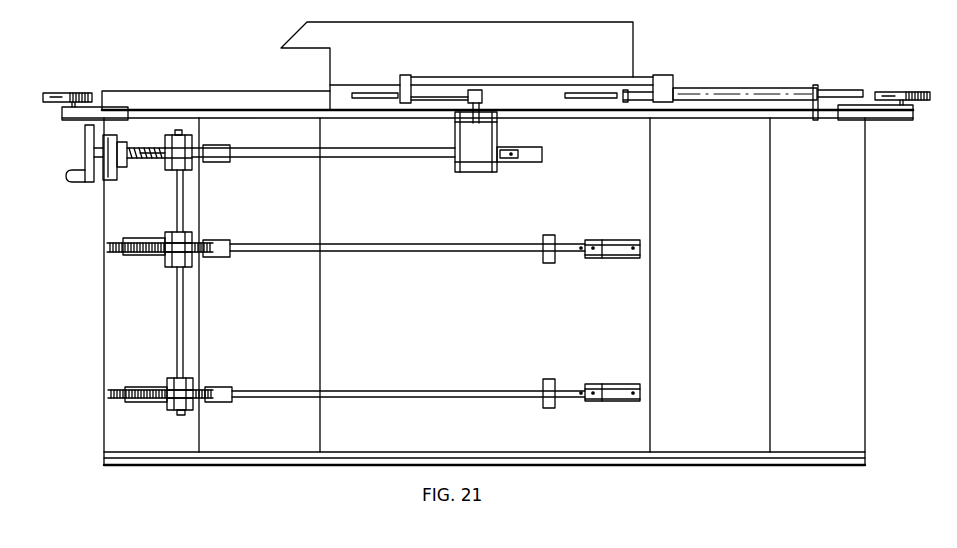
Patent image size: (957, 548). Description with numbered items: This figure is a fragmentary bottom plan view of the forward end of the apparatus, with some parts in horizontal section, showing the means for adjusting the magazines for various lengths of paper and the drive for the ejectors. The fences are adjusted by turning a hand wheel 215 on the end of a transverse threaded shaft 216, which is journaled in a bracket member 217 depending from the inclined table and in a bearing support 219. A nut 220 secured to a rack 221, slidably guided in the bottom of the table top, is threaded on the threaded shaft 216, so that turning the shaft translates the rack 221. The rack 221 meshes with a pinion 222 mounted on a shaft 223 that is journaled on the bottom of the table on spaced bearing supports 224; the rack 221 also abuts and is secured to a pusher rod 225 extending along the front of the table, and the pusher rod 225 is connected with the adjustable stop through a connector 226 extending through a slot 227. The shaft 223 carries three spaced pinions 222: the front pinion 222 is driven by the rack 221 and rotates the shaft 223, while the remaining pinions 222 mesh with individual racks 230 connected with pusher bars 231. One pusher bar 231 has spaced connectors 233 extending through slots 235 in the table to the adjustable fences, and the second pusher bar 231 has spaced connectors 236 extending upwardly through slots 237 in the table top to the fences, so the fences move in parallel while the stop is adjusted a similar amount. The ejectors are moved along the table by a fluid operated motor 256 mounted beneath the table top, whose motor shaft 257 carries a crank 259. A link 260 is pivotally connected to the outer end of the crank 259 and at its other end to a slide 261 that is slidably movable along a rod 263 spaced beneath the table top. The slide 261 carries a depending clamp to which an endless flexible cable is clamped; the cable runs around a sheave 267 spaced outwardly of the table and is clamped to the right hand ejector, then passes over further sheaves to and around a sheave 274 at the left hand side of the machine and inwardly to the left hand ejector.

The hand wheel 215 is at (78, 170).
The threaded shaft 216 is at (152, 158).
The bracket member 217 is at (100, 182).
The bearing support 219 is at (112, 181).
The nut 220 is at (127, 165).
The rack 221 is at (150, 147).
The pinion 222 is at (192, 162).
The shaft 223 is at (181, 209).
The bearing support 224 is at (190, 142).
The pusher rod 225 is at (391, 160).
The connector 226 is at (518, 162).
The slot 227 is at (542, 155).
The rack 230 is at (117, 253).
The pusher bar 231 is at (448, 246).
The connector 233 is at (618, 391).
The slot 235 is at (227, 402).
The connector 236 is at (617, 246).
The slot 237 is at (220, 240).
The fluid operated motor 256 is at (475, 163).
The motor shaft 257 is at (483, 105).
The crank 259 is at (442, 100).
The link 260 is at (567, 80).
The slide 261 is at (670, 88).
The rod 263 is at (752, 92).
The sheave 267 is at (892, 92).
The sheave 274 is at (60, 93).